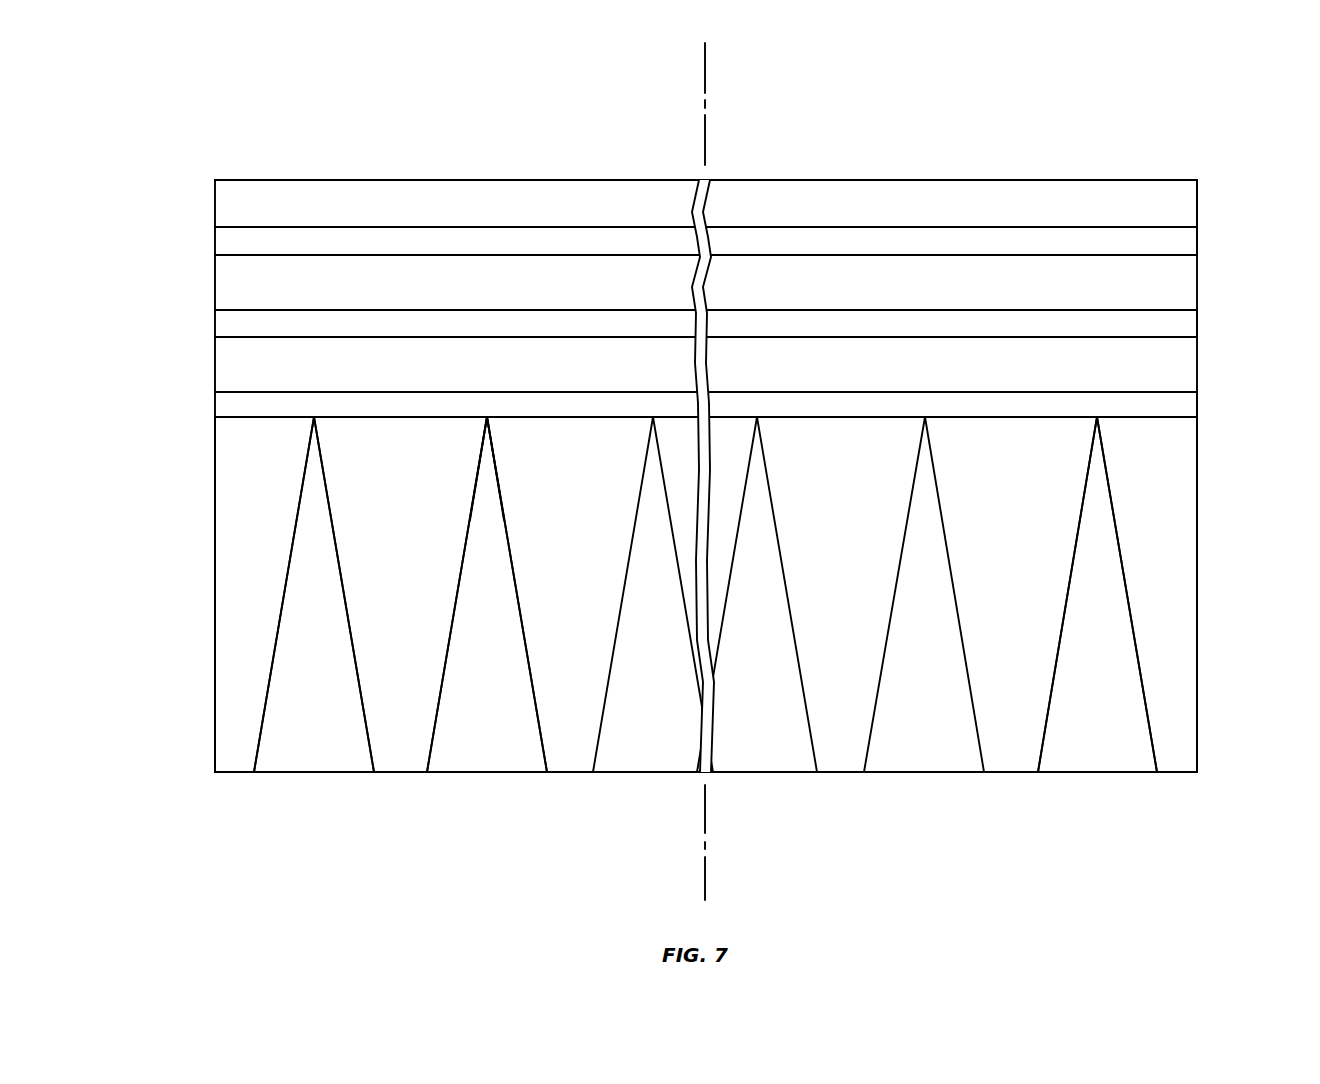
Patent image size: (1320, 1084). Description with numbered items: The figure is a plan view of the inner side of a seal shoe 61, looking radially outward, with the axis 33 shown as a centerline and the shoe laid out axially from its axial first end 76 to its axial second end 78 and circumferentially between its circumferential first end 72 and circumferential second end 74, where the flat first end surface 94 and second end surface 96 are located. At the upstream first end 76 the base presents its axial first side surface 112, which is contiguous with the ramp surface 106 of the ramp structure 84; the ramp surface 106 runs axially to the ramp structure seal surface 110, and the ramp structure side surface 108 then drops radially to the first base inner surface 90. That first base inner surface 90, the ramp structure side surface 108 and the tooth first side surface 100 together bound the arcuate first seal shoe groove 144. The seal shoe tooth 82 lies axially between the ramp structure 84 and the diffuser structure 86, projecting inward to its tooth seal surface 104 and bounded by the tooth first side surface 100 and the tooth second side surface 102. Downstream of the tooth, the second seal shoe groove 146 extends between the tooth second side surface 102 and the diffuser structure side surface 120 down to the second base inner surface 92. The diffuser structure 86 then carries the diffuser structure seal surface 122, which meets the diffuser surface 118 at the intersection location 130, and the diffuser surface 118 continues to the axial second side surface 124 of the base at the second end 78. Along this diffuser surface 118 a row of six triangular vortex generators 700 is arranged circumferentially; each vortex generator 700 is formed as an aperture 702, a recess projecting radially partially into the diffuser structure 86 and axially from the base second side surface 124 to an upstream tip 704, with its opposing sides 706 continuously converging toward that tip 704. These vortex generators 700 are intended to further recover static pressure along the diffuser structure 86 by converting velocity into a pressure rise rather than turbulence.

The seal shoe 61 is at (733, 429).
The axial first end 76 is at (233, 180).
The axial first side surface 112 is at (704, 137).
The ramp surface 106 is at (226, 207).
The ramp structure 84 is at (1210, 214).
The circumferential second end 74 is at (215, 243).
The second end surface 96 is at (647, 234).
The circumferential first end 72 is at (1197, 243).
The first end surface 94 is at (1104, 241).
The ramp structure seal surface 110 is at (232, 243).
The ramp structure side surface 108 is at (268, 257).
The first seal shoe groove 144 is at (1178, 285).
The first base inner surface 90 is at (230, 287).
The tooth first side surface 100 is at (393, 310).
The tooth seal surface 104 is at (230, 325).
The seal shoe tooth 82 is at (1213, 322).
The tooth second side surface 102 is at (262, 340).
The second seal shoe groove 146 is at (1178, 365).
The second base inner surface 92 is at (237, 365).
The diffuser structure side surface 120 is at (361, 392).
The diffuser structure seal surface 122 is at (237, 406).
The intersection location 130 is at (1171, 419).
The diffuser surface 118 is at (230, 497).
The diffuser structure 86 is at (1222, 505).
The axial second end 78 is at (232, 773).
The axial second side surface 124 is at (653, 803).
The vortex generator 700 is at (297, 787).
The aperture 702 is at (342, 724).
The upstream tip 704 is at (487, 417).
The opposing sides 706 is at (455, 610).
The axis 33 is at (706, 888).